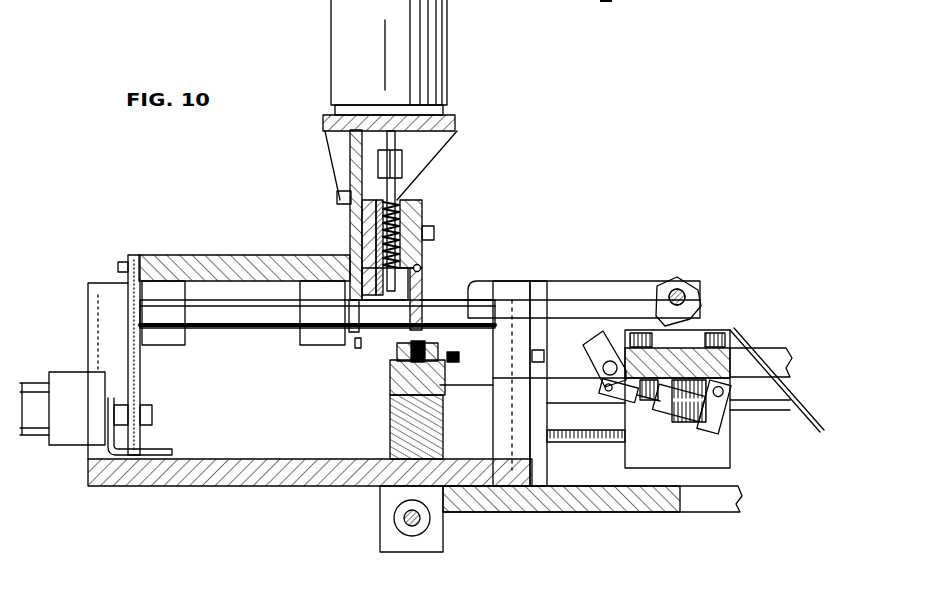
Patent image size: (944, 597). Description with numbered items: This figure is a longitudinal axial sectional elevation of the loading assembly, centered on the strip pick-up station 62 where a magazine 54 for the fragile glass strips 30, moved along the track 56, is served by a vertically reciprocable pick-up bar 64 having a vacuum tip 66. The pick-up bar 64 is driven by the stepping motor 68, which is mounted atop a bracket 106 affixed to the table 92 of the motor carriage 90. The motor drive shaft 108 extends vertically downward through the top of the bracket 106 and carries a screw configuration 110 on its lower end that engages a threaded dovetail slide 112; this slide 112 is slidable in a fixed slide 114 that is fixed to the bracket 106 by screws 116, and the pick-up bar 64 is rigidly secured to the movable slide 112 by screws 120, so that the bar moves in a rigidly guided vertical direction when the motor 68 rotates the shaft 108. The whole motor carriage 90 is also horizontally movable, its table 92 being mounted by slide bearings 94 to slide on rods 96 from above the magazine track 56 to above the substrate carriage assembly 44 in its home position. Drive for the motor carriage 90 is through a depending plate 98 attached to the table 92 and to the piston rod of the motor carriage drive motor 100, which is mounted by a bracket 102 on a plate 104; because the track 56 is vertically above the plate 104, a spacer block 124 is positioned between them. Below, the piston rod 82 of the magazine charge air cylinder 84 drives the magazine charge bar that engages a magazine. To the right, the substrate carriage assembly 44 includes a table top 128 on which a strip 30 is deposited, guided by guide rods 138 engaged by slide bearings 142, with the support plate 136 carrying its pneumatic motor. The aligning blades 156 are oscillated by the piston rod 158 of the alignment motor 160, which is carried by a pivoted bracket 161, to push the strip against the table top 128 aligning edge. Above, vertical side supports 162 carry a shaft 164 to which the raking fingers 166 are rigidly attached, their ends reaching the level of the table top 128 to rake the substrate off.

The stepping motor 68 is at (445, 85).
The bracket 106 is at (350, 147).
The screws 116 is at (338, 176).
The motor drive shaft 108 is at (422, 150).
The screw configuration 110 is at (396, 205).
The threaded dovetail slide 112 is at (421, 230).
The screws 120 is at (434, 232).
The fixed slide 114 is at (360, 236).
The motor carriage 90 is at (262, 235).
The table 92 is at (218, 256).
The strip pick-up station 62 is at (526, 243).
The pick-up bar 64 is at (422, 272).
The vacuum tip 66 is at (430, 312).
The vertical side supports 162 is at (598, 286).
The raking fingers 166 is at (662, 285).
The shaft 164 is at (688, 277).
The substrate carriage assembly 44 is at (744, 300).
The glass strip 30 is at (424, 343).
The table top 128 is at (736, 333).
The aligning blades 156 is at (586, 348).
The magazine 54 is at (397, 353).
The track 56 is at (394, 383).
The slide bearings 94 is at (184, 343).
The rods 96 is at (270, 328).
The depending plate 98 is at (141, 376).
The motor carriage drive motor 100 is at (76, 372).
The bracket 102 is at (154, 452).
The plate 104 is at (262, 459).
The spacer block 124 is at (448, 452).
The piston rod 158 is at (614, 400).
The alignment motor 160 is at (665, 414).
The pivoted bracket 161 is at (705, 432).
The guide rods 138 is at (558, 440).
The slide bearings 142 is at (732, 458).
The support plate 136 is at (618, 513).
The piston rod 82 is at (404, 522).
The magazine charge air cylinder 84 is at (413, 555).